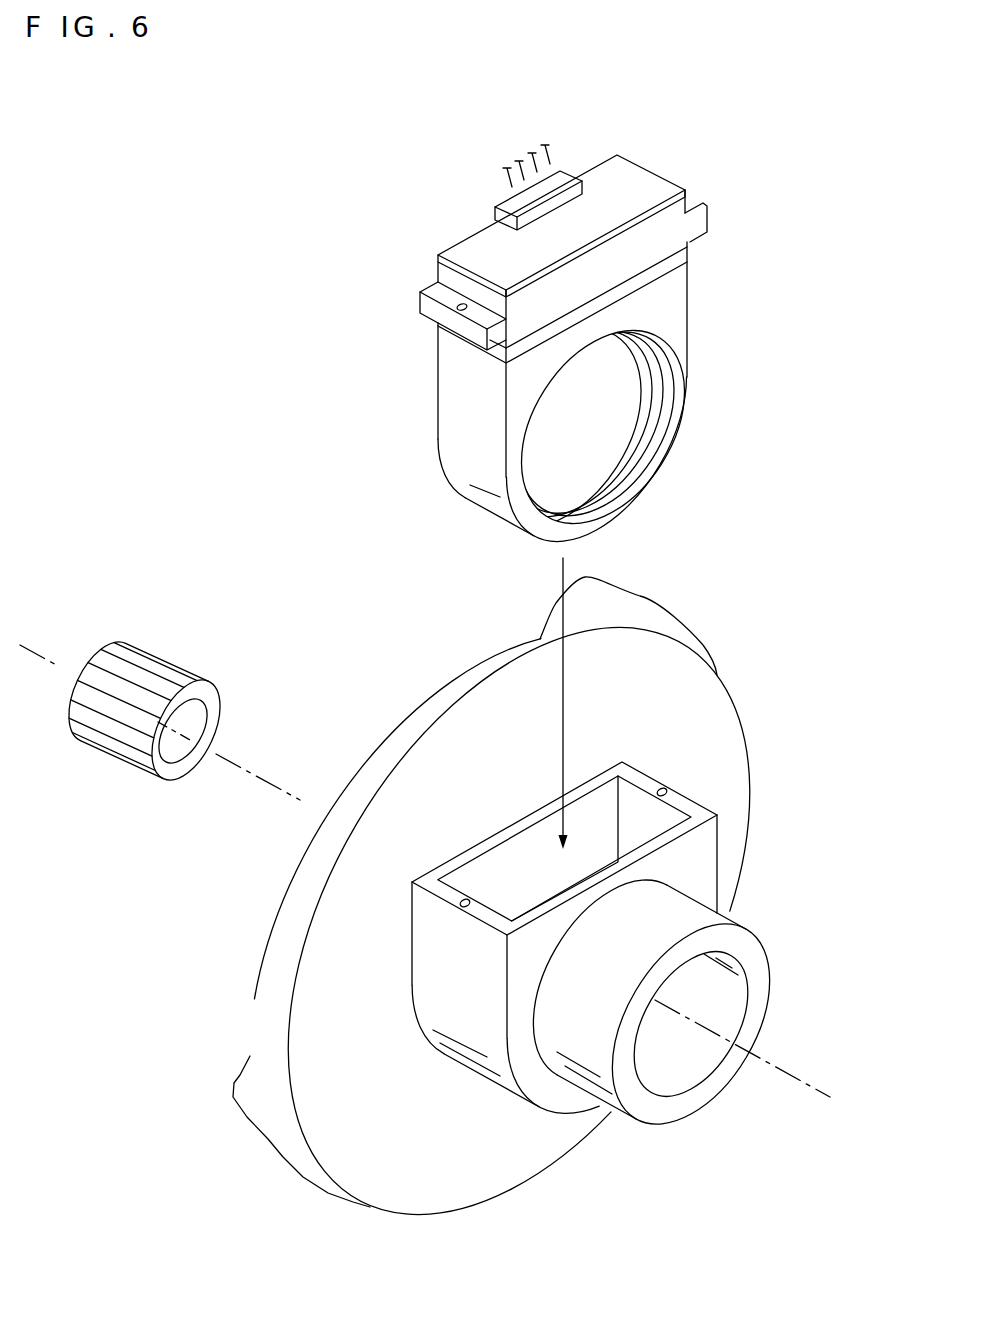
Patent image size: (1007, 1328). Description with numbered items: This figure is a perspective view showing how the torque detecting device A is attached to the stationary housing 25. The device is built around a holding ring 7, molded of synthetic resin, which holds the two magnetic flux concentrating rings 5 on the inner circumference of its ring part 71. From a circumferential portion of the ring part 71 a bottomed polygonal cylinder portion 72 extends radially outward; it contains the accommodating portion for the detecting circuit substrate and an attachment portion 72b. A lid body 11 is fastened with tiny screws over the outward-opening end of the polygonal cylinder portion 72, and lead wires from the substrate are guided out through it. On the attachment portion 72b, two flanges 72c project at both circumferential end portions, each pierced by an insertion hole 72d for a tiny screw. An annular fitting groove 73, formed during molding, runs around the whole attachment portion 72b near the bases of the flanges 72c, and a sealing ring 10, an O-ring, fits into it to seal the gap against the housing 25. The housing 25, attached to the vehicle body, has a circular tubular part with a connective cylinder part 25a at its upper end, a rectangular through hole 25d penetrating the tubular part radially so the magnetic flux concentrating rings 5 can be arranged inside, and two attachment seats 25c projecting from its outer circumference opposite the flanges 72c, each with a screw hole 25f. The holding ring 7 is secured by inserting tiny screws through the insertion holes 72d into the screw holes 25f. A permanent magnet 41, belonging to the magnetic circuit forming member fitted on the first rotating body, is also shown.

The sensor unit A is at (597, 146).
The magnetic flux concentrating ring 5 is at (606, 437).
The holding ring 7 is at (430, 437).
The sealing ring 10 is at (673, 262).
The lid body 11 is at (633, 170).
The permanent magnet 41 is at (91, 744).
The ring part 71 is at (532, 536).
The polygonal cylinder portion 72 is at (438, 258).
The attachment portion 72b is at (668, 238).
The flange 72c is at (694, 204).
The insertion hole 72d is at (456, 309).
The fitting groove 73 is at (640, 278).
The housing 25 is at (752, 840).
The connective cylinder part 25a is at (697, 905).
The attachment seat 25c is at (698, 800).
The through hole 25d is at (493, 872).
The screw hole 25f is at (664, 788).